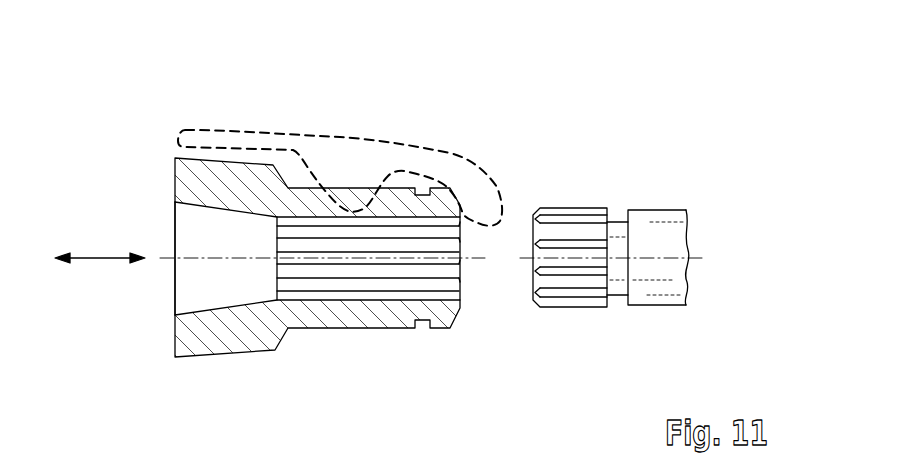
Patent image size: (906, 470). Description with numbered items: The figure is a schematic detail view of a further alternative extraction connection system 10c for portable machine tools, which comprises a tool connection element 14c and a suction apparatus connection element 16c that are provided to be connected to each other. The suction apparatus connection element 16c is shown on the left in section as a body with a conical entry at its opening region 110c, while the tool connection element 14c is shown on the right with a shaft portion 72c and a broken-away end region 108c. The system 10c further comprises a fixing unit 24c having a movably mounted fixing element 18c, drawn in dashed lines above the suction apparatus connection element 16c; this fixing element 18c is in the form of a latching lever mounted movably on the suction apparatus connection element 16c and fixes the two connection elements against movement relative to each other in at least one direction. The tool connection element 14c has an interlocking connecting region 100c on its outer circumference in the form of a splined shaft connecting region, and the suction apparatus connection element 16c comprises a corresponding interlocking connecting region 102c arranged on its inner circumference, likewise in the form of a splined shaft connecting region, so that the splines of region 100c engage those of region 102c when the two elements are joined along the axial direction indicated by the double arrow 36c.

The extraction connection system 10c is at (694, 103).
The tool connection element 14c is at (664, 215).
The suction apparatus connection element 16c is at (188, 186).
The fixing element 18c is at (348, 146).
The fixing unit 24c is at (566, 105).
The axial displacement direction 36c is at (98, 257).
The shaft neck 72c is at (622, 222).
The interlocking connecting region 100c is at (570, 318).
The interlocking connecting region 102c is at (366, 288).
The shaft portion 108c is at (700, 257).
The insertion opening 110c is at (168, 260).